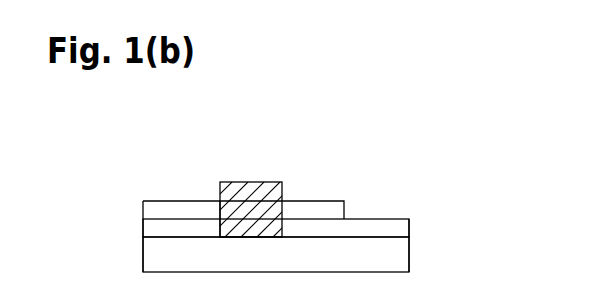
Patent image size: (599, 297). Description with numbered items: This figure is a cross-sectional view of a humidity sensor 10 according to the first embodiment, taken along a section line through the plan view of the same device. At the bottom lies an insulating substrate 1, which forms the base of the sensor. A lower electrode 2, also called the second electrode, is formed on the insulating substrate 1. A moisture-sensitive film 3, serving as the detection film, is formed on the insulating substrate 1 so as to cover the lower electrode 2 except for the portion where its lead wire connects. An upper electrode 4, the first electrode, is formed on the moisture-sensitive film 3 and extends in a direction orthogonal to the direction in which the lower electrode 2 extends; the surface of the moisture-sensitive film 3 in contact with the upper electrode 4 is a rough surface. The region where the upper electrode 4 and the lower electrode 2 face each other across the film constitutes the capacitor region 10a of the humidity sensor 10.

The insulating substrate 1 is at (398, 256).
The lower electrode 2 is at (398, 229).
The moisture-sensitive film 3 is at (344, 212).
The upper electrode 4 is at (283, 185).
The humidity sensor 10 is at (423, 142).
The capacitor region 10a is at (222, 212).